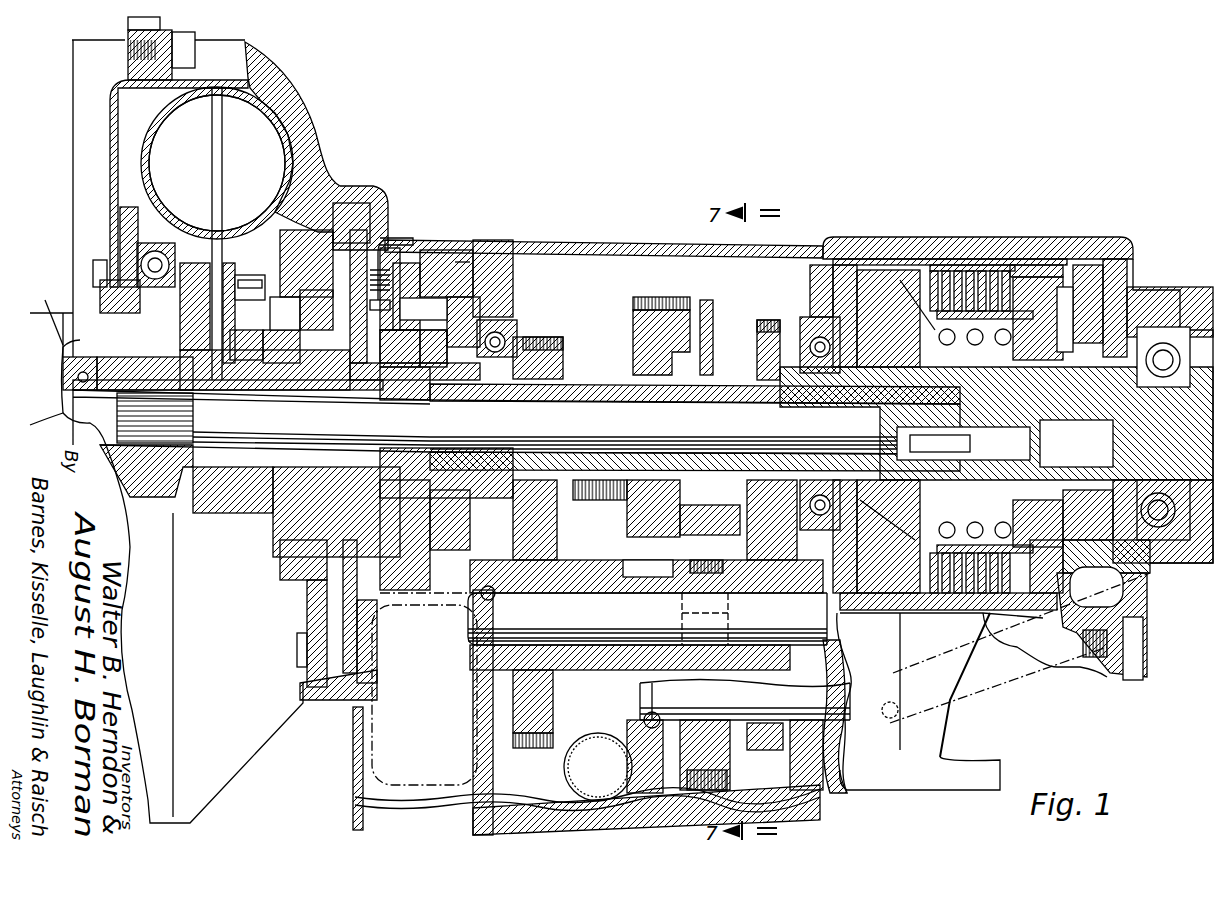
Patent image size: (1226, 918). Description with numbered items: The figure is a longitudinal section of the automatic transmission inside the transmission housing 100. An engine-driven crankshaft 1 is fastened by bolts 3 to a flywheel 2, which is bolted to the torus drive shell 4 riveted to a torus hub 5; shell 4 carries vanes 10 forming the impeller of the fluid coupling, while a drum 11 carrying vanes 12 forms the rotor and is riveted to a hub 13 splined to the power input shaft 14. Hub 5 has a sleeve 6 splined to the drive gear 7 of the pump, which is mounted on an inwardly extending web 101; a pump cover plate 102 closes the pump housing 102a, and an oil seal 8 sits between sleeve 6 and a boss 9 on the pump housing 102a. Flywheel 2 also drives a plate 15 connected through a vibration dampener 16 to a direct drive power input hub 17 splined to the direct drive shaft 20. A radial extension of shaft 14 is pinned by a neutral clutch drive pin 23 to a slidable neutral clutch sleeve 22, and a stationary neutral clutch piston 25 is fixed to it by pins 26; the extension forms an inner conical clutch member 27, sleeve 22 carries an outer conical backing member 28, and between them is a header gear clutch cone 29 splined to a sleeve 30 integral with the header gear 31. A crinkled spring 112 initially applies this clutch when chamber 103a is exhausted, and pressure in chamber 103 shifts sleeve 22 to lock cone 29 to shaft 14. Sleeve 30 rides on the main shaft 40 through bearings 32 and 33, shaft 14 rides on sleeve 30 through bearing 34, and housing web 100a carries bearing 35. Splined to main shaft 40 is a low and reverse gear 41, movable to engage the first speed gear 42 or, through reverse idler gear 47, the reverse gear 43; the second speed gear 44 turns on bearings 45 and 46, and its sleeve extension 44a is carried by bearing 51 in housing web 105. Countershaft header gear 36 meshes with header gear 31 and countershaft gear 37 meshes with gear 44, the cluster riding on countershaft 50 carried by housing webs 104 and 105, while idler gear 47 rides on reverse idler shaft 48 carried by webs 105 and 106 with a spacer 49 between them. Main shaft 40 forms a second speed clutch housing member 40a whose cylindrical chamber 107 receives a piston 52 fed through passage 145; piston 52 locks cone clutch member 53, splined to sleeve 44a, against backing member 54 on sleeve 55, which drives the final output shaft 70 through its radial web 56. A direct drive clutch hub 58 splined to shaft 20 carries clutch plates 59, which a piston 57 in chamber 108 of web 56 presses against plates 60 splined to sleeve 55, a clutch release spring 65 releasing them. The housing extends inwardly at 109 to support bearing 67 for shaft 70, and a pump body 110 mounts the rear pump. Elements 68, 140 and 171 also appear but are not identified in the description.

The crankshaft 1 is at (48, 312).
The flywheel 2 is at (110, 170).
The bolts 3 is at (98, 260).
The torus drive shell 4 is at (217, 80).
The torus hub 5 is at (265, 280).
The axially extending sleeve 6 is at (228, 340).
The drive gear 7 is at (305, 398).
The oil seal 8 is at (270, 310).
The boss 9 is at (250, 330).
The vanes 10 is at (283, 135).
The drum 11 is at (158, 120).
The vanes 12 is at (178, 135).
The hub 13 is at (198, 497).
The power input shaft 14 is at (272, 390).
The plate 15 is at (120, 212).
The vibration dampener 16 is at (160, 252).
The direct drive power input hub 17 is at (160, 497).
The direct drive shaft 20 is at (600, 470).
The neutral clutch sleeve 22 is at (474, 250).
The neutral clutch drive pin 23 is at (430, 590).
The neutral clutch piston 25 is at (380, 290).
The pins 26 is at (375, 310).
The inner conical clutch member 27 is at (432, 312).
The outer conical backing member 28 is at (470, 265).
The header gear clutch cone 29 is at (487, 292).
The sleeve 30 is at (563, 365).
The header gear 31 is at (560, 337).
The bearing 32 is at (388, 395).
The bearing 33 is at (520, 387).
The bearing 34 is at (420, 385).
The bearing 35 is at (517, 335).
The countershaft header gear 36 is at (583, 745).
The countershaft gear 37 is at (747, 525).
The main shaft 40 is at (612, 395).
The second speed clutch housing member 40a is at (910, 280).
The low and reverse gear 41 is at (636, 310).
The first speed gear 42 is at (605, 540).
The reverse gear 43 is at (700, 555).
The second speed gear 44 is at (757, 332).
The sleeve extension 44a is at (815, 400).
The bearing 45 is at (775, 388).
The bearing 46 is at (860, 400).
The reverse idler gear 47 is at (730, 778).
The reverse idler shaft 48 is at (640, 705).
The reverse idler shaft spacer 49 is at (765, 745).
The countershaft 50 is at (468, 615).
The bearing 51 is at (812, 320).
The piston 52 is at (880, 270).
The intermediate gear cone clutch member 53 is at (818, 337).
The conical backing member 54 is at (845, 265).
The sleeve 55 is at (1020, 262).
The radial web 56 is at (1090, 265).
The piston 57 is at (1045, 265).
The direct drive clutch hub 58 is at (957, 347).
The clutch plates 59 is at (1000, 265).
The clutch plates 60 is at (975, 265).
The clutch release spring 65 is at (1082, 575).
The bearing 67 is at (1170, 345).
The pin 68 is at (985, 445).
The final output shaft 70 is at (1185, 395).
The transmission housing 100 is at (392, 240).
The housing web 100a is at (513, 285).
The web 101 is at (410, 238).
The pump cover plate 102 is at (352, 230).
The pump housing 102a is at (290, 255).
The chamber 103 is at (428, 275).
The chamber 103a is at (417, 270).
The housing web 104 is at (480, 700).
The housing web 105 is at (790, 770).
The housing web 106 is at (640, 740).
The cylindrical chamber 107 is at (940, 265).
The cylindrical chamber 108 is at (1075, 305).
The housing inward extension 109 is at (1145, 290).
The pump body 110 is at (1133, 266).
The crinkled circular spring 112 is at (445, 520).
The ring 140 is at (445, 385).
The passage 145 is at (960, 410).
The plate 171 is at (706, 300).